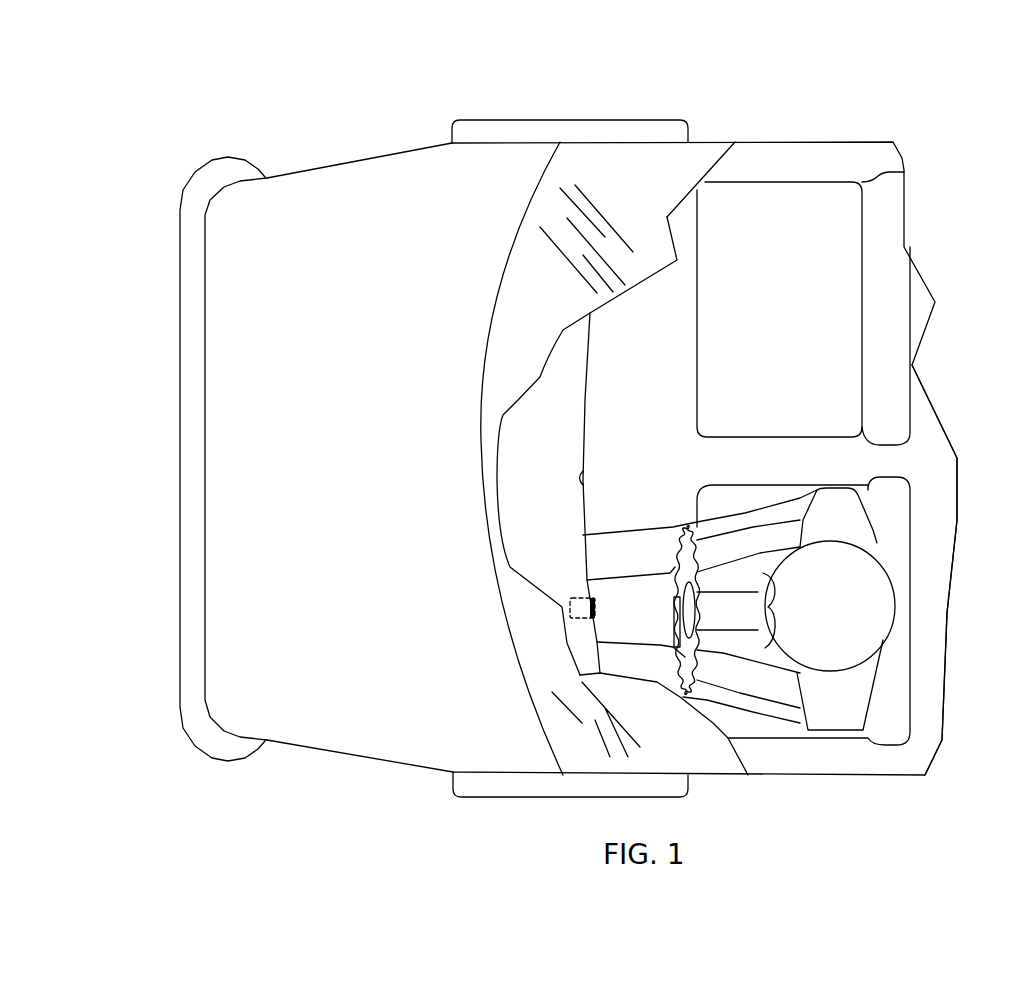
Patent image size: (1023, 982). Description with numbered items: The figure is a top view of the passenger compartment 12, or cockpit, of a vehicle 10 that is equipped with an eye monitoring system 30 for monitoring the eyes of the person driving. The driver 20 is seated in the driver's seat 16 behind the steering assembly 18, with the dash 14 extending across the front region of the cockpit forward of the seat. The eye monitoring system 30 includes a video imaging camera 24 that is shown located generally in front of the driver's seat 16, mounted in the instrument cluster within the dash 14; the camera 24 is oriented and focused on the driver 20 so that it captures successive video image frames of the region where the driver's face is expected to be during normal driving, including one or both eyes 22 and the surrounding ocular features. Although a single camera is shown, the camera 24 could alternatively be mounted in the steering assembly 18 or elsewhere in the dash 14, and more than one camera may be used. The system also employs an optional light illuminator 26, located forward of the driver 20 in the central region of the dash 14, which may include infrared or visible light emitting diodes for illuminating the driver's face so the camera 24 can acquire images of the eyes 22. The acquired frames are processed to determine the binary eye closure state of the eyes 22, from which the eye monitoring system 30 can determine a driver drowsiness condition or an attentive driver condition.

The vehicle 10 is at (333, 118).
The passenger compartment 12 is at (685, 355).
The dash 14 is at (583, 412).
The driver's seat 16 is at (917, 663).
The steering assembly 18 is at (673, 525).
The driver 20 is at (880, 545).
The eyes 22 is at (778, 590).
The video imaging camera 24 is at (590, 593).
The light illuminator 26 is at (586, 470).
The eye monitoring system 30 is at (560, 577).